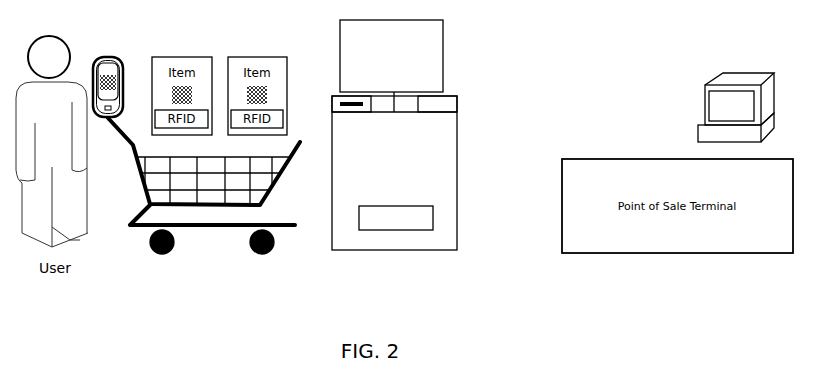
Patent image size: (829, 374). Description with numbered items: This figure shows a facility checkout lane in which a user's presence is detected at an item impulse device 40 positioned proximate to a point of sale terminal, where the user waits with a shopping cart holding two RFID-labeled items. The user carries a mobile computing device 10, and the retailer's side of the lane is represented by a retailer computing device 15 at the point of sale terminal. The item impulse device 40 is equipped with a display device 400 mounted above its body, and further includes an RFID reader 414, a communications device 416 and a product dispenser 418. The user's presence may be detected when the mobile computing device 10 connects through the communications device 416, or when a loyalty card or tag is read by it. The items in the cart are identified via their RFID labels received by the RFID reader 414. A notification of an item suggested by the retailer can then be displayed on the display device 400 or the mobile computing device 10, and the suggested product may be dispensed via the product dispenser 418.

The mobile computing device 10 is at (104, 57).
The retailer computing device 15 is at (705, 105).
The item impulse device 40 is at (394, 173).
The display device 400 is at (391, 56).
The RFID reader 414 is at (457, 97).
The communications device 416 is at (332, 97).
The product dispenser 418 is at (434, 213).